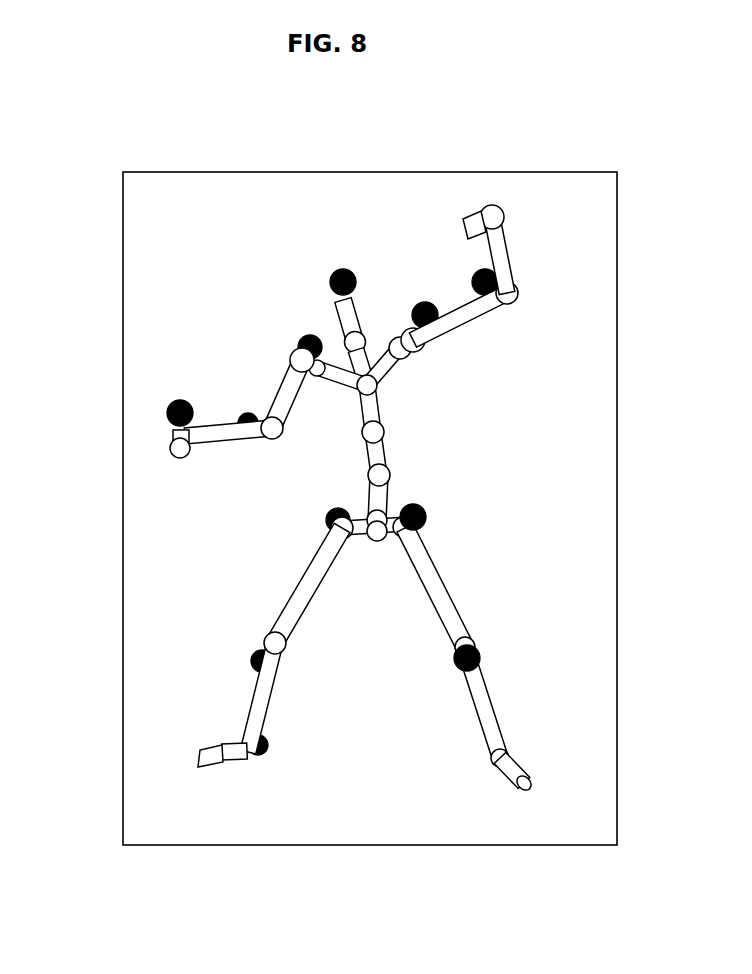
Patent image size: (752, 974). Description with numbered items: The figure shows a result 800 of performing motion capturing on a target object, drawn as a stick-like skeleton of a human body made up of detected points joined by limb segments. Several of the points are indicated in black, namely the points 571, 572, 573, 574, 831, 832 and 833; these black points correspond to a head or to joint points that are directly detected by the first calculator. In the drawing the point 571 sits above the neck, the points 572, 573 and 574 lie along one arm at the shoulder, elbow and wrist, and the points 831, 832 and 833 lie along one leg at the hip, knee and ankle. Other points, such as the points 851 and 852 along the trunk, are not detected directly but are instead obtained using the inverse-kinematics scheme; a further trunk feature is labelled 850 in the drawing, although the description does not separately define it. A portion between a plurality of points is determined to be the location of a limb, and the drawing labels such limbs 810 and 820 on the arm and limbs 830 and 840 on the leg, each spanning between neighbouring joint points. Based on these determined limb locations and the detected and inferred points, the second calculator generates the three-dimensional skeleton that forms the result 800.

The result 800 is at (397, 132).
The point 571 is at (333, 272).
The point 572 is at (303, 340).
The point 573 is at (250, 432).
The point 574 is at (168, 410).
The limb 810 is at (285, 390).
The limb 820 is at (200, 442).
The spine segment 850 is at (371, 410).
The point 851 is at (372, 380).
The point 852 is at (377, 433).
The limb 830 is at (437, 592).
The point 831 is at (426, 514).
The point 832 is at (479, 651).
The point 833 is at (497, 775).
The limb 840 is at (490, 700).